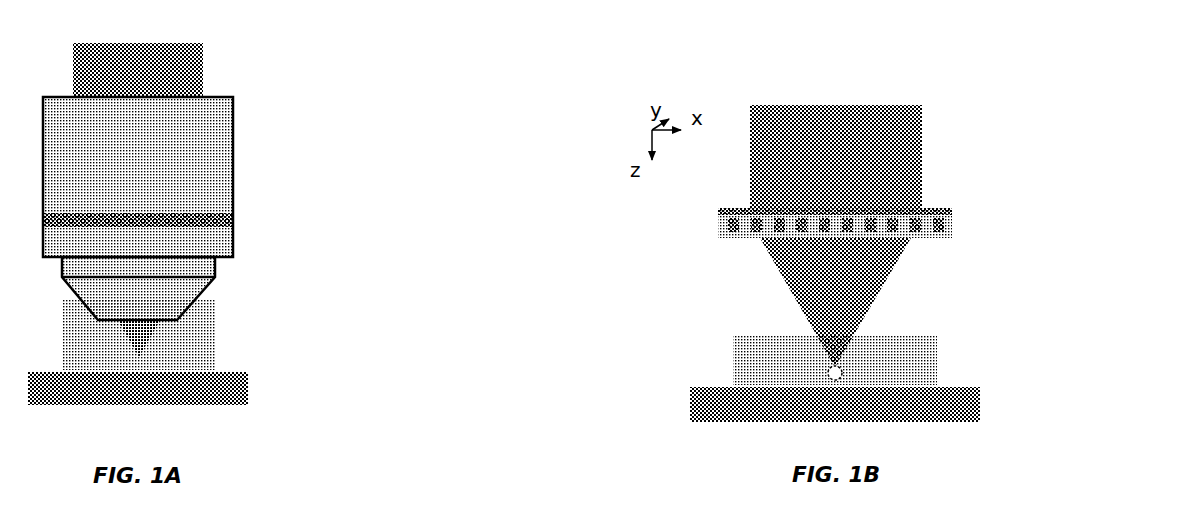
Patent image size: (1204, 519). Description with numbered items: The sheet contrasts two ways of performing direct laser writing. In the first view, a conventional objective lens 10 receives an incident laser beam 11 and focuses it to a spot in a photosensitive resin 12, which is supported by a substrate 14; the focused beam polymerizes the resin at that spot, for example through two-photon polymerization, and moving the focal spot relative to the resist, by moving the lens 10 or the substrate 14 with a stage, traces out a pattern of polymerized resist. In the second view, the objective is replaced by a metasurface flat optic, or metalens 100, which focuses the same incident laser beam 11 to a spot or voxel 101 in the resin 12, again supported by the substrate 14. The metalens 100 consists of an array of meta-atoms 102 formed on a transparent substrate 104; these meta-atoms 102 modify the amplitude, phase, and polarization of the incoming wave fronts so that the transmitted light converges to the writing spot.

In FIG. 1A, the objective lens 10 is at (138, 208).
In FIG. 1A, the laser beam 11 is at (138, 52).
In FIG. 1B, the laser beam 11 is at (839, 218).
In FIG. 1A, the photosensitive resin 12 is at (215, 330).
In FIG. 1B, the photosensitive resin 12 is at (942, 352).
In FIG. 1A, the substrate 14 is at (252, 383).
In FIG. 1B, the substrate 14 is at (982, 403).
In FIG. 1B, the metalens 100 is at (789, 191).
In FIG. 1B, the voxel 101 is at (821, 363).
In FIG. 1B, the meta-atoms 102 is at (948, 223).
In FIG. 1B, the transparent substrate 104 is at (669, 218).